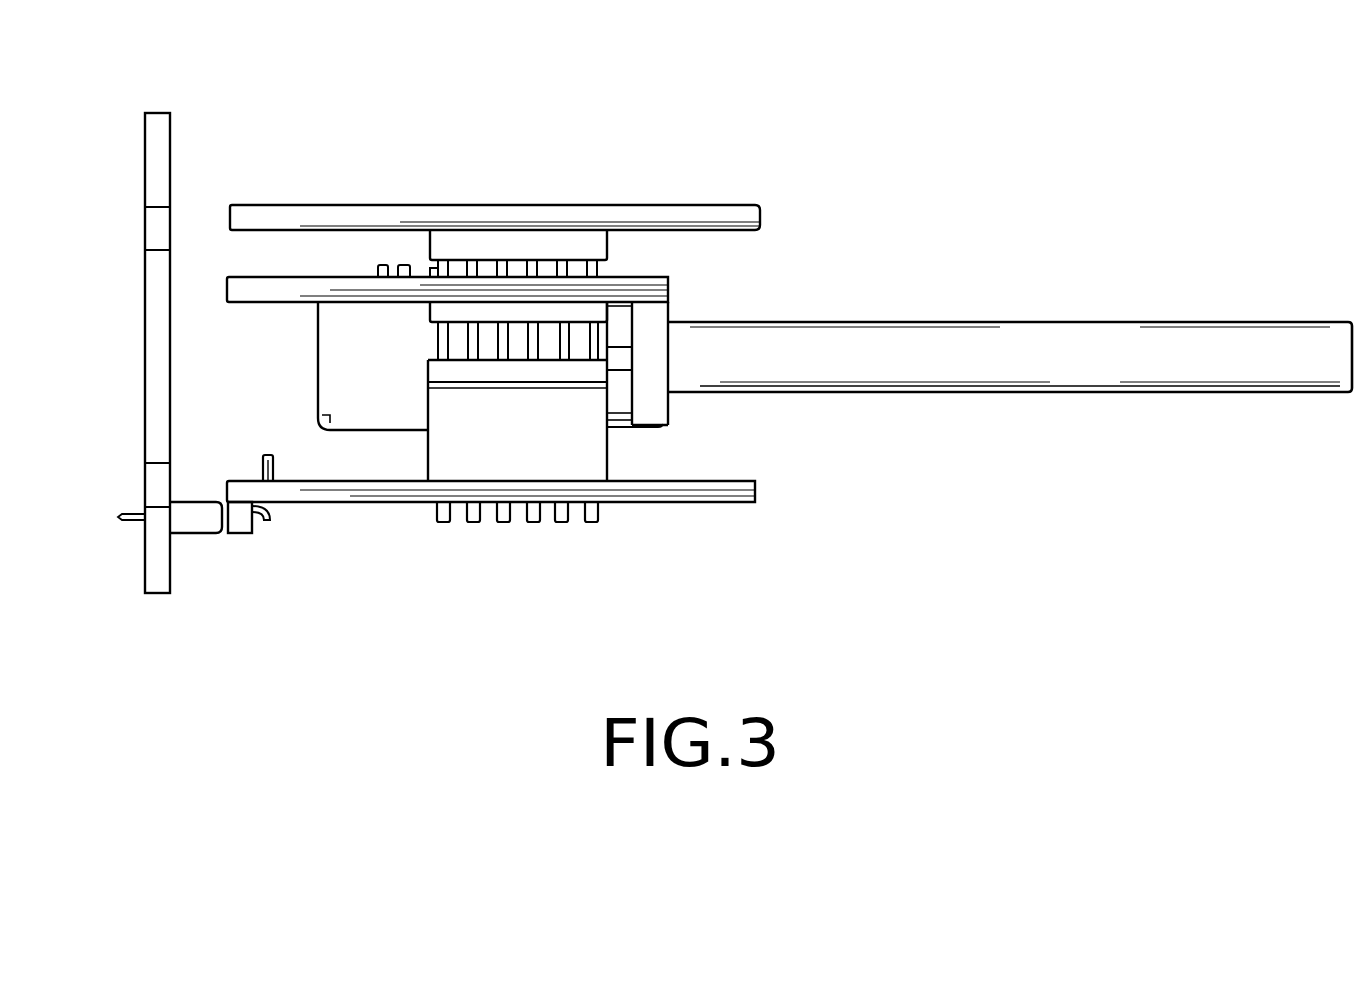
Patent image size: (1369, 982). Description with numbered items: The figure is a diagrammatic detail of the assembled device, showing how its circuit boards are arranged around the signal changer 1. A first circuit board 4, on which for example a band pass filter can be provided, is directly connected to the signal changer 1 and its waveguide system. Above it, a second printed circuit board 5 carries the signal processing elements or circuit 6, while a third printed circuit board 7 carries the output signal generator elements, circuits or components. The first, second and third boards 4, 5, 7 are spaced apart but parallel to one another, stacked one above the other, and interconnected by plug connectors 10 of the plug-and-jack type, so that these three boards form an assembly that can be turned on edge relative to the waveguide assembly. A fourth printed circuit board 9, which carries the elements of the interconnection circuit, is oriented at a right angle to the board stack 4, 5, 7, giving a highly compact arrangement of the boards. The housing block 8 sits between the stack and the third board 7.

The signal changer 1 is at (1151, 343).
The first circuit board 4 is at (662, 288).
The second printed circuit board 5 is at (763, 218).
The signal processing circuit 6 is at (503, 240).
The third printed circuit board 7 is at (755, 503).
The housing block 8 is at (452, 445).
The fourth printed circuit board 9 is at (157, 583).
The plug connectors 10 is at (594, 522).